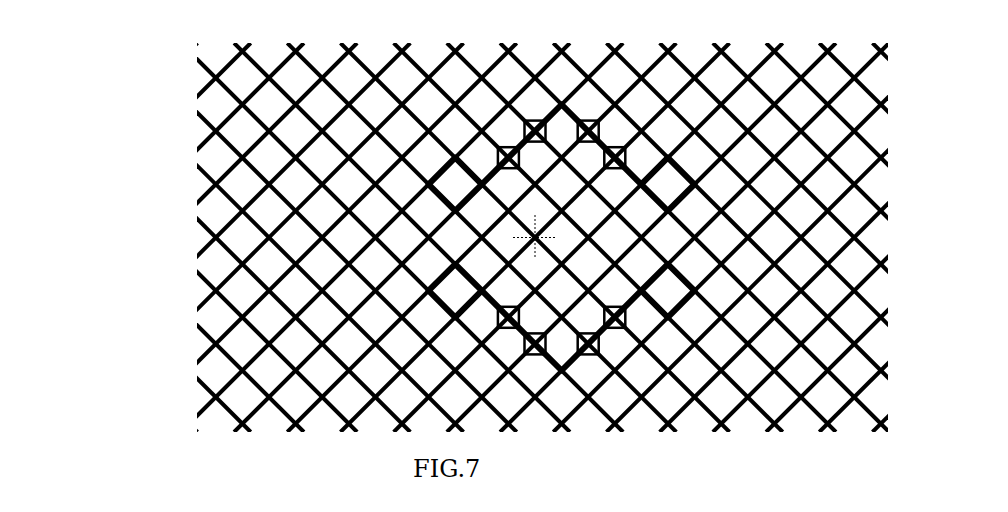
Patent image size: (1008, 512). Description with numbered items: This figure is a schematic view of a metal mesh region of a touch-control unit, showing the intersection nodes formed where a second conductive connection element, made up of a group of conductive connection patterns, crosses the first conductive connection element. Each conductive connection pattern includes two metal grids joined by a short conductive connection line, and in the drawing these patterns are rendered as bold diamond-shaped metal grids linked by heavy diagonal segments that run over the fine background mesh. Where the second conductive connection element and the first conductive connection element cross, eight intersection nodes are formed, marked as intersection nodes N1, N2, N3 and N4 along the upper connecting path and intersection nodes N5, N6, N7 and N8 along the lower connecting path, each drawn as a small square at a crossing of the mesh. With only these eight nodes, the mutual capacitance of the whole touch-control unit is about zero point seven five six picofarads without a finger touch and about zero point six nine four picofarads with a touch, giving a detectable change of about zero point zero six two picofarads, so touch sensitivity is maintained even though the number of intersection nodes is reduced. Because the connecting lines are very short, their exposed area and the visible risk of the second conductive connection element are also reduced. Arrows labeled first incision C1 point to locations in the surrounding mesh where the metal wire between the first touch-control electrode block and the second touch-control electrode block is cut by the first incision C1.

The first incision C1 is at (255, 200).
The intersection node N1 is at (505, 150).
The intersection node N2 is at (533, 121).
The intersection node N3 is at (586, 121).
The intersection node N4 is at (616, 150).
The intersection node N5 is at (508, 307).
The intersection node N6 is at (538, 335).
The intersection node N7 is at (588, 335).
The intersection node N8 is at (617, 305).